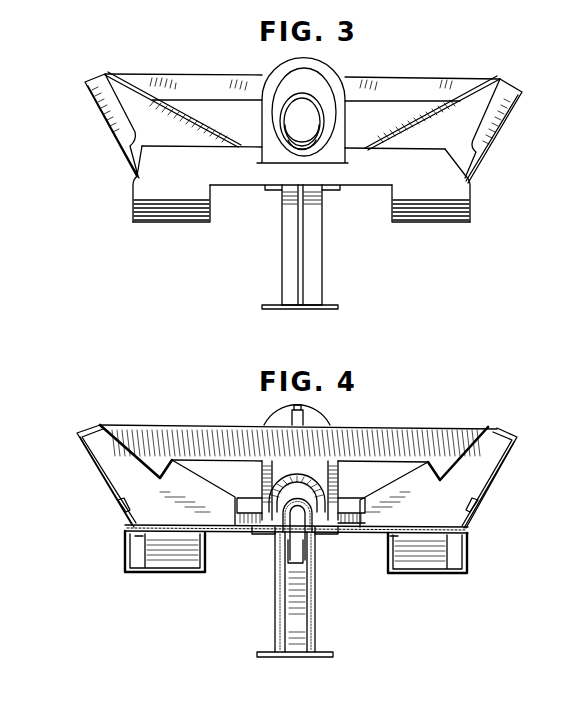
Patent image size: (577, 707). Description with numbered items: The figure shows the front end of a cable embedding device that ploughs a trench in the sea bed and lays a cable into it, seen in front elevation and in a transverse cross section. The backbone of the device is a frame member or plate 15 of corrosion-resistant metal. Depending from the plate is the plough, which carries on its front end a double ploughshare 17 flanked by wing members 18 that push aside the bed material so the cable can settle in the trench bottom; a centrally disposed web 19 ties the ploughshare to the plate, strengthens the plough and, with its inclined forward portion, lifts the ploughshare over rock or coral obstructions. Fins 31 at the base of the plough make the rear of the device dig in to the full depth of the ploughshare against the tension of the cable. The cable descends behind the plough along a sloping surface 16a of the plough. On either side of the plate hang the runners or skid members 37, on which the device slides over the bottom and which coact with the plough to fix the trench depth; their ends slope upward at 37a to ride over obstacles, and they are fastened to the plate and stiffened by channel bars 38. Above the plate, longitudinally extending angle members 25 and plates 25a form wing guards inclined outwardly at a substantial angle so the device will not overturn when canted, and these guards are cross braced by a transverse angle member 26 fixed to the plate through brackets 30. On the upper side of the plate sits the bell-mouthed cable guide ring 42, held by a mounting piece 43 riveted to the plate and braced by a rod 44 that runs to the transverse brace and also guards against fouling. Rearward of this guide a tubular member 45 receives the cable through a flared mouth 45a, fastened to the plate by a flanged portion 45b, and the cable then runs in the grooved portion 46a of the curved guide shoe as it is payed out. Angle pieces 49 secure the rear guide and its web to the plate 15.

In FIG. 4, the frame member or plate 15 is at (198, 527).
In FIG. 4, the sloping surface of the plough 16a is at (290, 619).
In FIG. 3, the double ploughshare 17 is at (312, 309).
In FIG. 3, the wing members 18 is at (300, 260).
In FIG. 3, the web 19 is at (306, 233).
In FIG. 3, the longitudinally extending angle members 25 is at (108, 112).
In FIG. 4, the longitudinally extending angle members 25 is at (94, 425).
In FIG. 4, the plates 25a is at (105, 470).
In FIG. 3, the transverse angle member 26 is at (400, 86).
In FIG. 4, the transverse angle member 26 is at (385, 432).
In FIG. 3, the brackets 30 is at (200, 128).
In FIG. 4, the brackets 30 is at (208, 487).
In FIG. 3, the fins 31 is at (262, 306).
In FIG. 4, the fins 31 is at (318, 657).
In FIG. 3, the runners or skid members 37 is at (172, 222).
In FIG. 4, the runners or skid members 37 is at (173, 573).
In FIG. 3, the upwardly sloping portion of runners 37a is at (150, 191).
In FIG. 4, the channel bars 38 is at (140, 552).
In FIG. 3, the cable guide ring 42 is at (270, 66).
In FIG. 4, the cable guide ring 42 is at (280, 418).
In FIG. 4, the mounting piece 43 is at (252, 512).
In FIG. 4, the rod 44 is at (306, 412).
In FIG. 4, the tubular member 45 is at (345, 500).
In FIG. 3, the flared mouth 45a is at (304, 128).
In FIG. 4, the flared mouth 45a is at (302, 476).
In FIG. 4, the flanged portion 45b is at (348, 518).
In FIG. 4, the grooved portion of shoe 46a is at (308, 562).
In FIG. 3, the angle pieces 49 is at (270, 188).
In FIG. 4, the angle pieces 49 is at (268, 536).